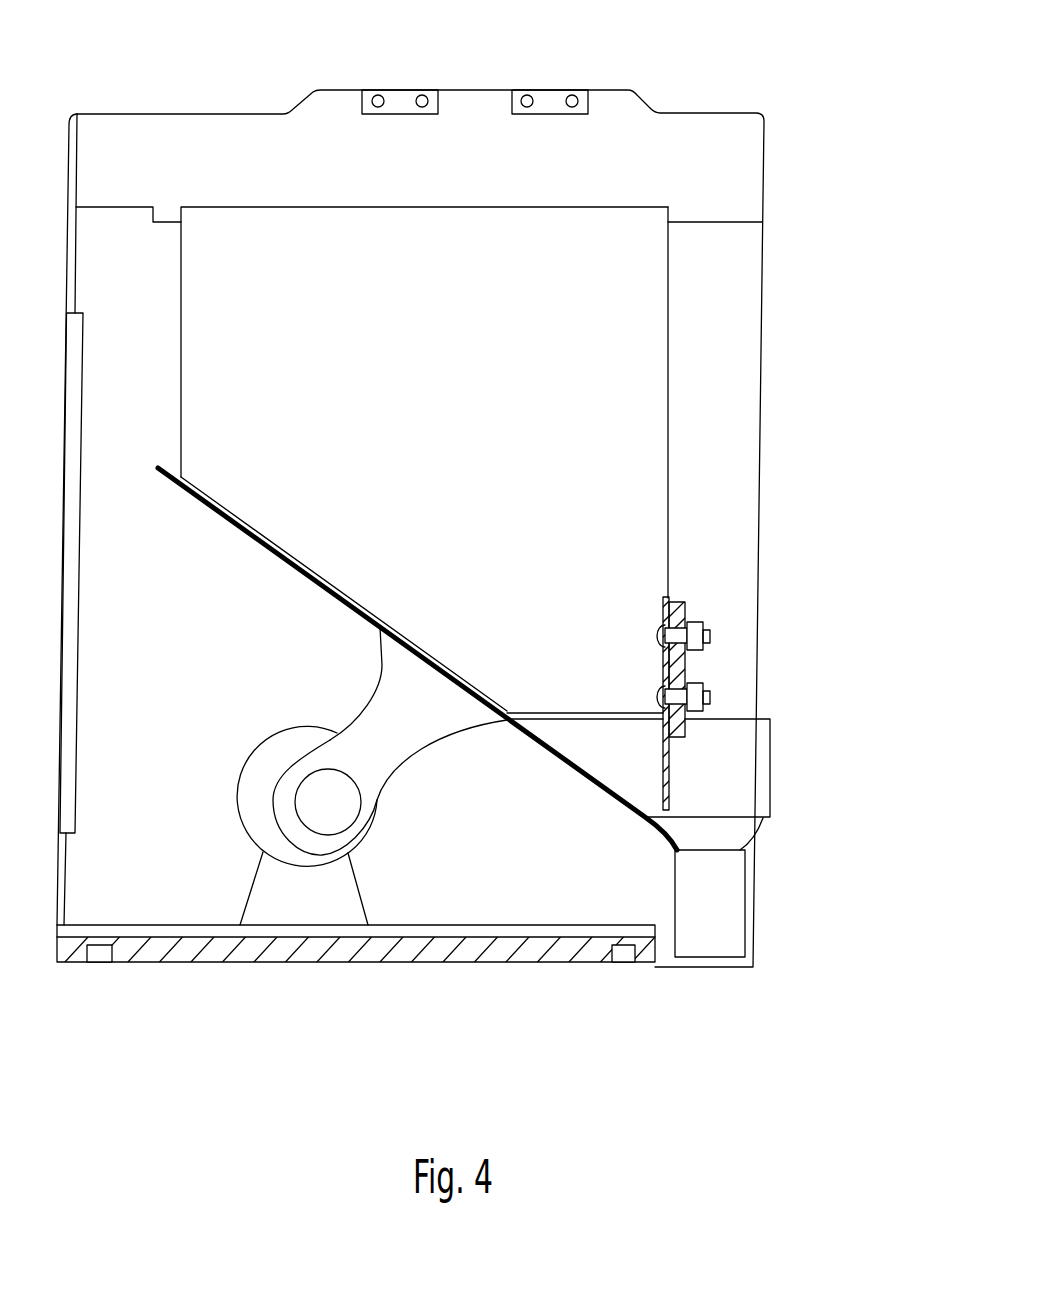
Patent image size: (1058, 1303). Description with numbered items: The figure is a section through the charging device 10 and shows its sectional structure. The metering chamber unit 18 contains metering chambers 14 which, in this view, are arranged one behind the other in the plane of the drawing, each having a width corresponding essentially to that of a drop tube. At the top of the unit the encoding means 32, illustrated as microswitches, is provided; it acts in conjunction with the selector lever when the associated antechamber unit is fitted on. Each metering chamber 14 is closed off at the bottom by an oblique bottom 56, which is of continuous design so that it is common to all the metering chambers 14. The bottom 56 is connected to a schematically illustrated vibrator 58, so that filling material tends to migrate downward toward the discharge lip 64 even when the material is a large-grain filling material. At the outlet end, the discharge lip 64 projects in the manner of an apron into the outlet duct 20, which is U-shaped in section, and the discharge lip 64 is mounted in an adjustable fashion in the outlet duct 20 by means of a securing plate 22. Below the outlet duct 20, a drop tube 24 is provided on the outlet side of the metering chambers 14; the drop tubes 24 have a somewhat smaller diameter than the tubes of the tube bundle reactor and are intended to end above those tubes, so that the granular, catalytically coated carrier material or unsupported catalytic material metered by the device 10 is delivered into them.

The charging device 10 is at (872, 160).
The metering chamber 14 is at (239, 252).
The metering chamber unit 18 is at (630, 403).
The outlet duct 20 is at (748, 736).
The securing plate 22 is at (673, 658).
The drop tube 24 is at (717, 930).
The encoding means 32 is at (566, 90).
The oblique bottom 56 is at (279, 563).
The vibrator 58 is at (332, 807).
The discharge lip 64 is at (670, 795).